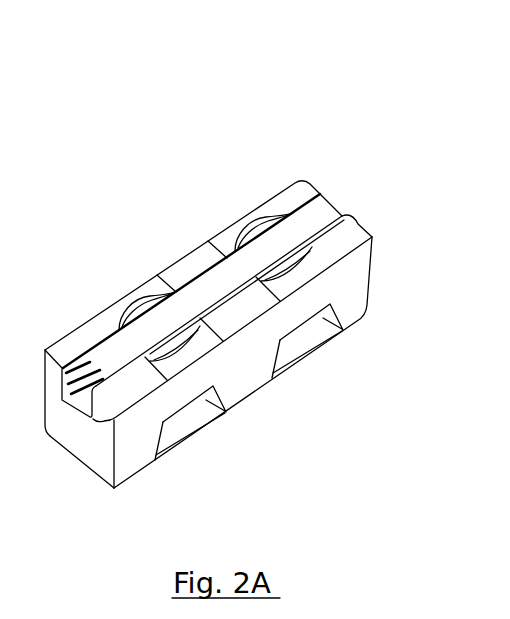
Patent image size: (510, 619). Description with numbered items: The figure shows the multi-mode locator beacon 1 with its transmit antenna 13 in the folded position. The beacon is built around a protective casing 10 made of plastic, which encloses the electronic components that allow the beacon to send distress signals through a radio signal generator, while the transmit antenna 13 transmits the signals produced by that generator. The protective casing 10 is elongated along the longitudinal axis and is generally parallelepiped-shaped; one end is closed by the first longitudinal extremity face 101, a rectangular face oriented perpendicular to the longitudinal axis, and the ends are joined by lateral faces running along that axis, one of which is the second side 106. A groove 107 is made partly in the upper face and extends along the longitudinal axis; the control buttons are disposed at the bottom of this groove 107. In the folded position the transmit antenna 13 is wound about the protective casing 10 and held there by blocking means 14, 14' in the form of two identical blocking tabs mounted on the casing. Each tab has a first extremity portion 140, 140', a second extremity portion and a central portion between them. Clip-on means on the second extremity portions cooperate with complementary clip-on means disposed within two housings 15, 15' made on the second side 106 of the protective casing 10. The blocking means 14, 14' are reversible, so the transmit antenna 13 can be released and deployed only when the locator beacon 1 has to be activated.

The multi-mode locator beacon 1 is at (220, 140).
The protective casing 10 is at (66, 320).
The transmit antenna 13 is at (220, 283).
The blocking means (blocking tab) 14 is at (202, 457).
The housing 15 is at (221, 429).
The first extremity portion 140 is at (188, 475).
The blocking means (blocking tab) 14' is at (323, 374).
The housing 15' is at (342, 348).
The first extremity portion 140' is at (308, 391).
The first longitudinal extremity face 101 is at (82, 432).
The lateral face (second side) 106 is at (352, 264).
The groove 107 is at (324, 202).